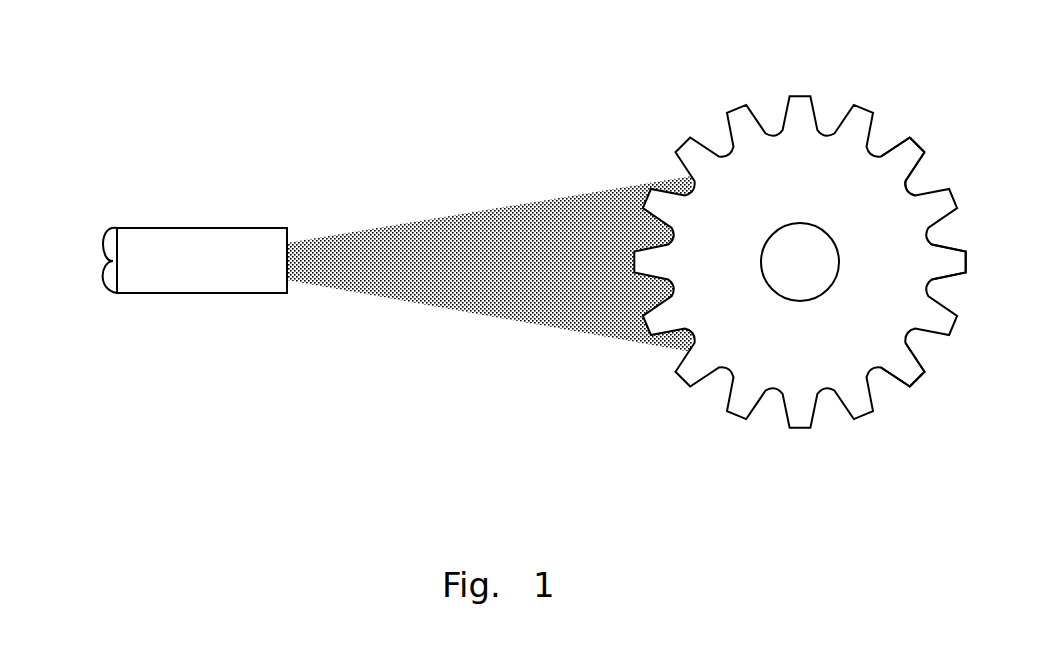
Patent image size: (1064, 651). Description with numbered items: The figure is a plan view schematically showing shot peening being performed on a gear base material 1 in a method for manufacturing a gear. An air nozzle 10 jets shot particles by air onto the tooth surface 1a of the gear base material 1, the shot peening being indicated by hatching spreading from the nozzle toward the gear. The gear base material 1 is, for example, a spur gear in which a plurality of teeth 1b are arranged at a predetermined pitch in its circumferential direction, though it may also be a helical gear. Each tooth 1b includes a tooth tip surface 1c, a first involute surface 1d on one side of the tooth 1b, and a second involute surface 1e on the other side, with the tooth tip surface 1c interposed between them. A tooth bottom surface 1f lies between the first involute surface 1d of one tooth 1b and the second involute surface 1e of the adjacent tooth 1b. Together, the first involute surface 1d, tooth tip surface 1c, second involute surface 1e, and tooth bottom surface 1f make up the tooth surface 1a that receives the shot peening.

The gear base material 1 is at (884, 68).
The tooth surface 1a is at (895, 392).
The tooth 1b is at (960, 261).
The tooth tip surface 1c is at (918, 141).
The first involute surface 1d is at (889, 137).
The second involute surface 1e is at (920, 167).
The tooth bottom surface 1f is at (908, 189).
The air nozzle 10 is at (190, 288).